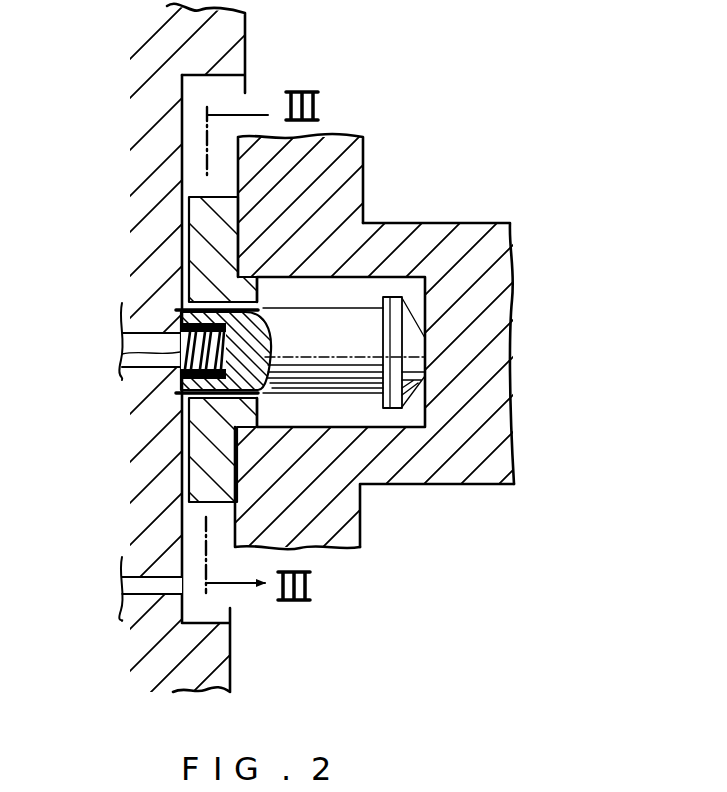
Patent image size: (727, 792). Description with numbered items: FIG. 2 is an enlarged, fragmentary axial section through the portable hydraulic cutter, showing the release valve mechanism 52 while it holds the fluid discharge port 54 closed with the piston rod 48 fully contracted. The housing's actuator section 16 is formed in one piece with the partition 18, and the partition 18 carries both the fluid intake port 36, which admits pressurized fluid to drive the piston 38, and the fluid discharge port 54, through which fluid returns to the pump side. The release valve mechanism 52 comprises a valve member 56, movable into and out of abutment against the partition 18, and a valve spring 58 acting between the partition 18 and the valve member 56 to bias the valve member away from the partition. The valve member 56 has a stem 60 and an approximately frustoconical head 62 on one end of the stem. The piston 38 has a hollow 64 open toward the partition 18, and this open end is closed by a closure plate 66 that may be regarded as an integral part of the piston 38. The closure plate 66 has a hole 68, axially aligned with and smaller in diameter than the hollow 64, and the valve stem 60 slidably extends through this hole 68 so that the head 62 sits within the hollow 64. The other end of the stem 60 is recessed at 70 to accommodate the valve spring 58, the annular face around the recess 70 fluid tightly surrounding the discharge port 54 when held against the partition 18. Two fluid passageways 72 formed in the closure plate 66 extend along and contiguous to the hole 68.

The actuator section 16 is at (235, 31).
The partition 18 is at (143, 118).
The fluid intake port 36 is at (143, 580).
The piston 38 is at (355, 167).
The piston rod 48 is at (490, 474).
The release valve mechanism 52 is at (428, 280).
The fluid discharge port 54 is at (147, 342).
The valve member 56 is at (415, 293).
The valve spring 58 is at (122, 354).
The stem 60 is at (371, 300).
The head 62 is at (427, 348).
The hollow 64 is at (350, 413).
The closure plate 66 is at (198, 243).
The hole 68 is at (266, 331).
The recess 70 is at (180, 389).
The fluid passageways 72 is at (183, 311).